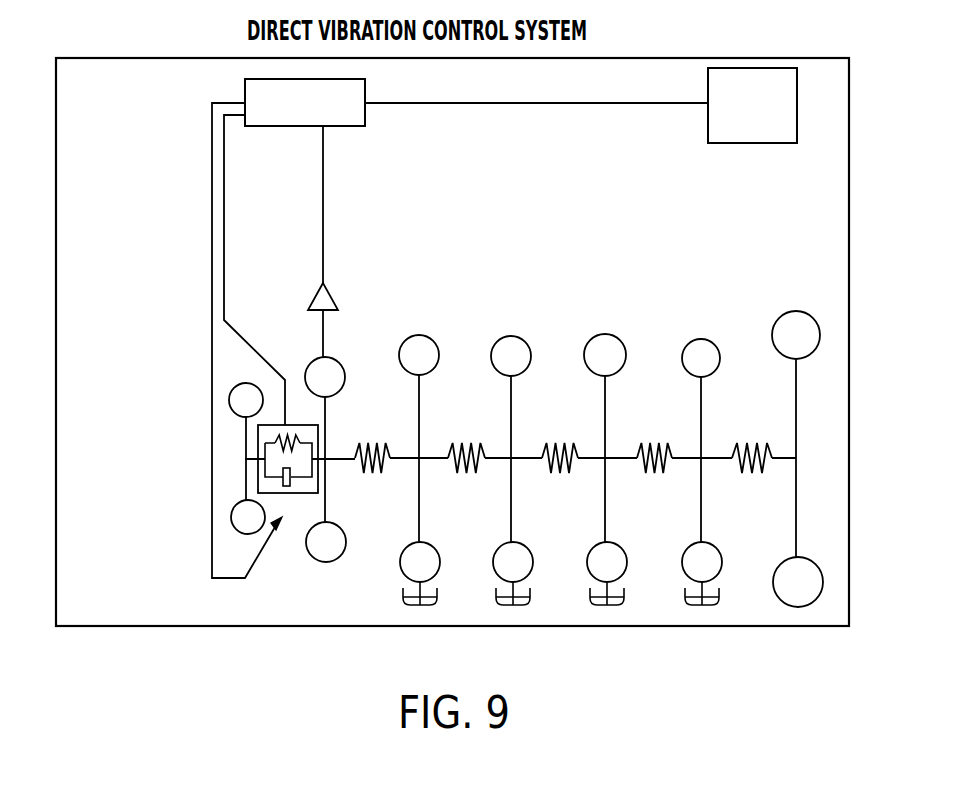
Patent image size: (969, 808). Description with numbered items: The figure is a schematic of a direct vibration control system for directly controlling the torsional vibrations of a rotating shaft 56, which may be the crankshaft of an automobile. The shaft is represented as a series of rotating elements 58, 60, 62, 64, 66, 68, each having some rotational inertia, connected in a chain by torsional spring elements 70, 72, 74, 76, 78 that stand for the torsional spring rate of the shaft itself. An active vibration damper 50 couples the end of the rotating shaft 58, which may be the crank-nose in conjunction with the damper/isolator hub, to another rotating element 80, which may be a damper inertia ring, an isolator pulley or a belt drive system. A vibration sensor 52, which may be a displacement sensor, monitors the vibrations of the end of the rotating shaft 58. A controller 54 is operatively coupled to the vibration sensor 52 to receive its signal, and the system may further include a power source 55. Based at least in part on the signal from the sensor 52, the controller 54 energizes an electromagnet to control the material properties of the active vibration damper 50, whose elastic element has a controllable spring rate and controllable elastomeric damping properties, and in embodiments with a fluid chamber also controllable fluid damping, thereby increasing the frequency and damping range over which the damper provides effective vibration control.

The active vibration damper 50 is at (296, 493).
The vibration sensor 52 is at (333, 300).
The controller 54 is at (245, 92).
The power source 55 is at (765, 143).
The rotating shaft 56 is at (332, 455).
The end of the rotating shaft 58 is at (311, 372).
The rotating element 60 is at (419, 335).
The rotating element 62 is at (511, 336).
The rotating element 64 is at (605, 334).
The rotating element 66 is at (702, 339).
The rotating element 68 is at (797, 311).
The torsional spring element 70 is at (377, 474).
The torsional spring element 72 is at (470, 476).
The torsional spring element 74 is at (559, 476).
The torsional spring element 76 is at (662, 476).
The torsional spring element 78 is at (755, 476).
The rotating element 80 is at (229, 400).